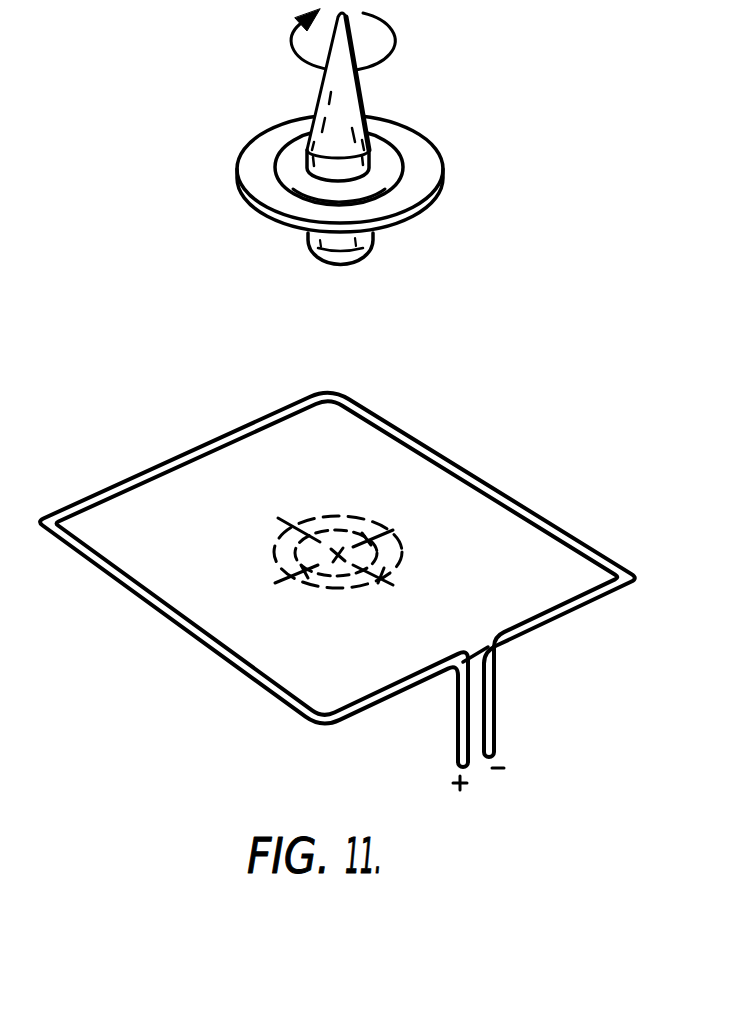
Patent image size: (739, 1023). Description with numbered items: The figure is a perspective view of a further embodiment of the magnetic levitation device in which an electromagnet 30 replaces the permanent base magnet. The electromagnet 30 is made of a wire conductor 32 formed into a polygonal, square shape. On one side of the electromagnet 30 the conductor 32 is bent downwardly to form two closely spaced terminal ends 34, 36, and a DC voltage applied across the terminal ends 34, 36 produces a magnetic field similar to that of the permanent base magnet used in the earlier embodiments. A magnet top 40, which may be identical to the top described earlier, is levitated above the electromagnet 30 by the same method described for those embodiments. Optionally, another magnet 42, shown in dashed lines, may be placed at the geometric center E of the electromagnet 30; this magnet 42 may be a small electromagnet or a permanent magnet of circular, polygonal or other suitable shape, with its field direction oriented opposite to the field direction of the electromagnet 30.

The electromagnet 30 is at (513, 465).
The wire conductor 32 is at (413, 432).
The terminal end 34 is at (458, 708).
The terminal end 36 is at (495, 707).
The magnet top 40 is at (470, 154).
The magnet 42 is at (402, 547).
The geometric center E is at (337, 556).